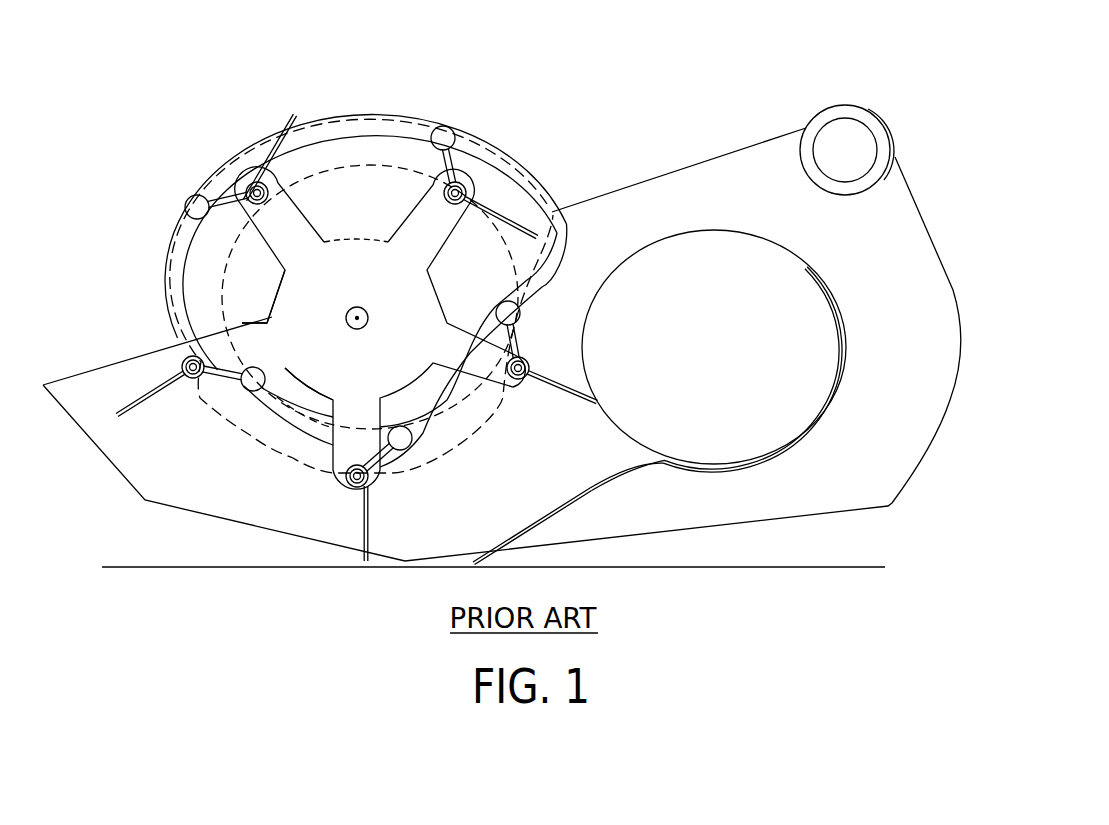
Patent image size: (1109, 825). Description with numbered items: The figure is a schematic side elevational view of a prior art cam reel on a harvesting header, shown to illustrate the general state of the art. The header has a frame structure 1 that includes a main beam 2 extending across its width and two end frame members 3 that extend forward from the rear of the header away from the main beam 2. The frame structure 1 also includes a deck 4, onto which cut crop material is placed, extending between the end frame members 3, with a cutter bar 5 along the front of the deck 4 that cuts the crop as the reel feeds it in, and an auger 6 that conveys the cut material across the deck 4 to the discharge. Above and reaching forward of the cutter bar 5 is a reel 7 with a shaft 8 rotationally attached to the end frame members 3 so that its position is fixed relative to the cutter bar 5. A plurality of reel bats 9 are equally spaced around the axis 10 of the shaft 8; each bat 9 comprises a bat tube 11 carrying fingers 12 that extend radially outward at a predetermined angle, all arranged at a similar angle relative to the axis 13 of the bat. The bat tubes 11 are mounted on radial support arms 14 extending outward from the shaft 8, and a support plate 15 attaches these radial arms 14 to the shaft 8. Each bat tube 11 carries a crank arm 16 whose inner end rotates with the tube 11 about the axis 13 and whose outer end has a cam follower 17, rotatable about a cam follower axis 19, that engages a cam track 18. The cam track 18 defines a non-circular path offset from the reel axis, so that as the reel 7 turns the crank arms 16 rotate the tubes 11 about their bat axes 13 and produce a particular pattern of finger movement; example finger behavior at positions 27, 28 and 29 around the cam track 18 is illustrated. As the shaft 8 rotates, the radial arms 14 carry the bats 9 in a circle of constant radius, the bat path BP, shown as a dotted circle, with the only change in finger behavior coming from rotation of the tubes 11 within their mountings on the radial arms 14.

The frame structure 1 is at (129, 349).
The main beam 2 is at (813, 112).
The end frame members 3 is at (750, 155).
The deck 4 is at (630, 470).
The cutter bar 5 is at (506, 548).
The auger 6 is at (680, 237).
The reel 7 is at (380, 226).
The shaft 8 is at (346, 311).
The reel bats 9 is at (207, 384).
The axis 10 is at (366, 321).
The bat tube 11 is at (182, 368).
The fingers 12 is at (140, 408).
The axis of the bat 13 is at (197, 345).
The radial support arms 14 is at (246, 321).
The support plate 15 is at (328, 226).
The crank arm 16 is at (250, 366).
The cam follower 17 is at (252, 392).
The cam track 18 is at (320, 413).
The cam follower axis 19 is at (282, 372).
The position 27 is at (193, 380).
The position 28 is at (345, 485).
The position 29 is at (523, 380).
The bat path BP is at (212, 237).